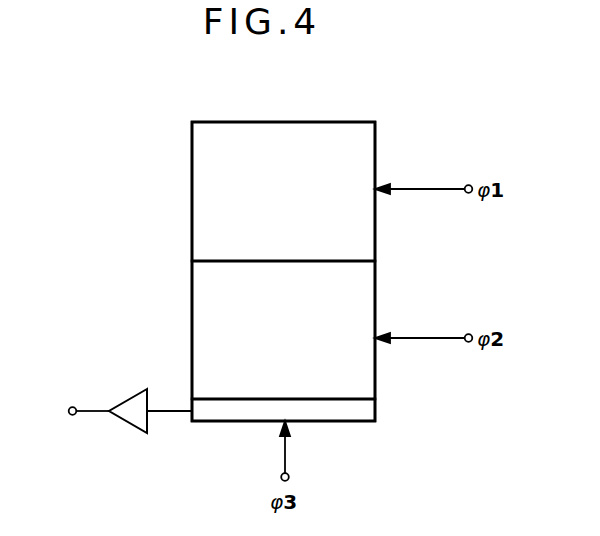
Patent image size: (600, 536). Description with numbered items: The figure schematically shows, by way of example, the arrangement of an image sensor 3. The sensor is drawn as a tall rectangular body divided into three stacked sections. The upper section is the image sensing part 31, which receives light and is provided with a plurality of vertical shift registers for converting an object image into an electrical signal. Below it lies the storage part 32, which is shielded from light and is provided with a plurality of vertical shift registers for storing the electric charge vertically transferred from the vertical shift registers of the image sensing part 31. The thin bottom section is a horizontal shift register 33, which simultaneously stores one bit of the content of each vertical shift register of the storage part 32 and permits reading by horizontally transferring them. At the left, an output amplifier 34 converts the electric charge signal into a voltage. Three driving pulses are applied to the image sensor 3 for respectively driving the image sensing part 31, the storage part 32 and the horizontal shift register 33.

The image sensor 3 is at (288, 120).
The image sensing part 31 is at (346, 120).
The storage part 32 is at (377, 295).
The horizontal shift register 33 is at (377, 409).
The output amplifier 34 is at (130, 398).